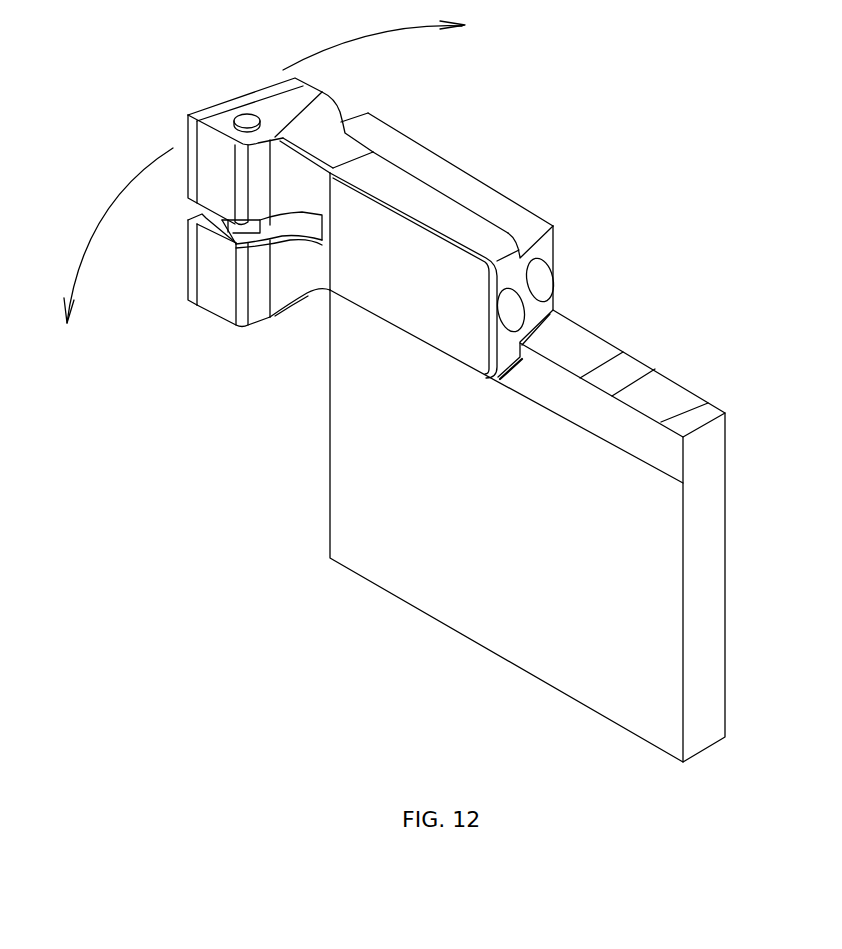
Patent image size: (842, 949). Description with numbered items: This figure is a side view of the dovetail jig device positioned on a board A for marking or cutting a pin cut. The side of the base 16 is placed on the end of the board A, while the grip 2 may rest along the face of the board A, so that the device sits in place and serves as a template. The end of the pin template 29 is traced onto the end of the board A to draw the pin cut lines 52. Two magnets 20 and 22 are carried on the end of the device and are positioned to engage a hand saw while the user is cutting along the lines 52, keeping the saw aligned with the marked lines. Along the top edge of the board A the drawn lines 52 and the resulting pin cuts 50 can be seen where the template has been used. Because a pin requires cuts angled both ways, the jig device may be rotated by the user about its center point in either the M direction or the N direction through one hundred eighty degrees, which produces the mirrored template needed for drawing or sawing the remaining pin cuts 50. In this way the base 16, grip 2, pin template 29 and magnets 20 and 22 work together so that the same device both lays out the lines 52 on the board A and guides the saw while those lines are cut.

The grip 2 is at (441, 276).
The base 16 is at (416, 162).
The magnet 20 is at (516, 313).
The magnet 22 is at (549, 275).
The pin template 29 is at (545, 239).
The pin cuts 50 is at (620, 356).
The pin cut lines 52 is at (642, 367).
The pin board A is at (527, 526).
The rotation direction M is at (110, 252).
The rotation direction N is at (387, 44).